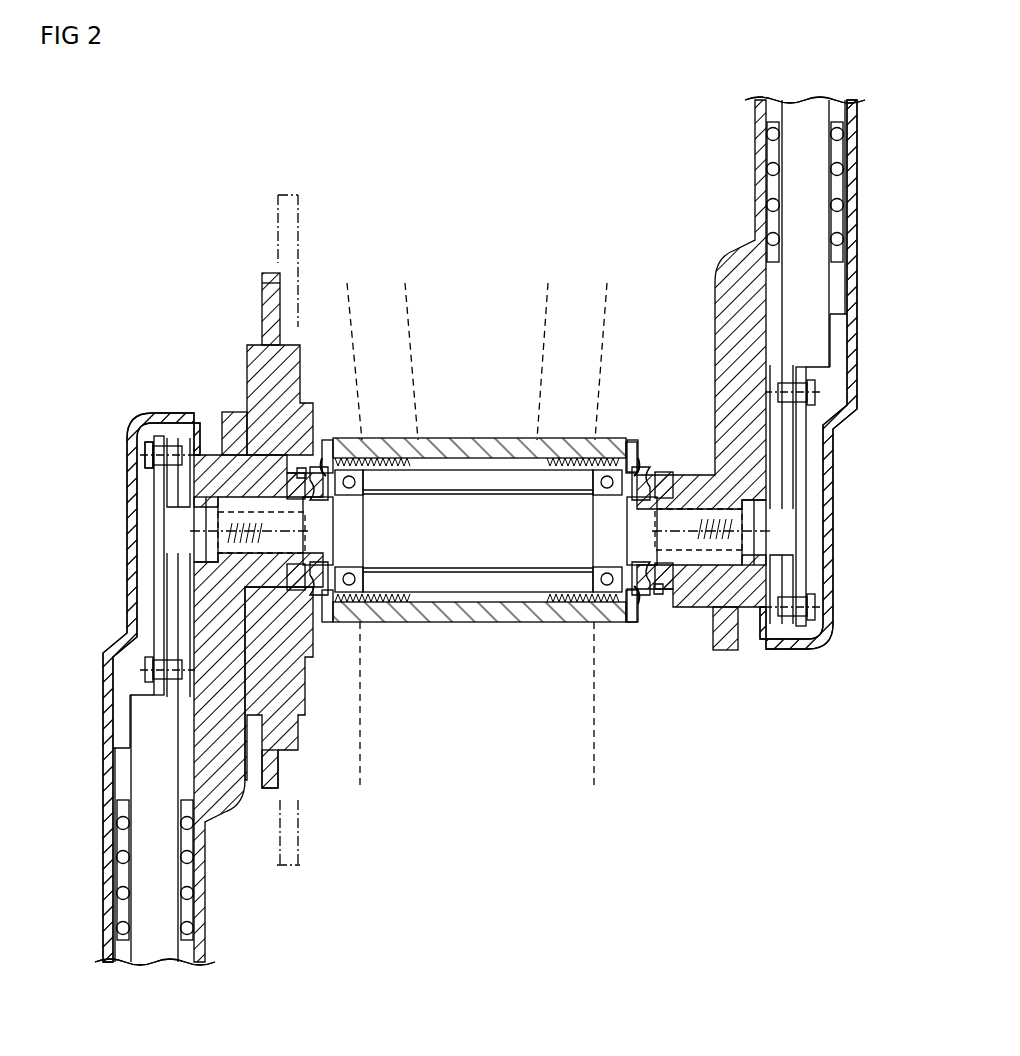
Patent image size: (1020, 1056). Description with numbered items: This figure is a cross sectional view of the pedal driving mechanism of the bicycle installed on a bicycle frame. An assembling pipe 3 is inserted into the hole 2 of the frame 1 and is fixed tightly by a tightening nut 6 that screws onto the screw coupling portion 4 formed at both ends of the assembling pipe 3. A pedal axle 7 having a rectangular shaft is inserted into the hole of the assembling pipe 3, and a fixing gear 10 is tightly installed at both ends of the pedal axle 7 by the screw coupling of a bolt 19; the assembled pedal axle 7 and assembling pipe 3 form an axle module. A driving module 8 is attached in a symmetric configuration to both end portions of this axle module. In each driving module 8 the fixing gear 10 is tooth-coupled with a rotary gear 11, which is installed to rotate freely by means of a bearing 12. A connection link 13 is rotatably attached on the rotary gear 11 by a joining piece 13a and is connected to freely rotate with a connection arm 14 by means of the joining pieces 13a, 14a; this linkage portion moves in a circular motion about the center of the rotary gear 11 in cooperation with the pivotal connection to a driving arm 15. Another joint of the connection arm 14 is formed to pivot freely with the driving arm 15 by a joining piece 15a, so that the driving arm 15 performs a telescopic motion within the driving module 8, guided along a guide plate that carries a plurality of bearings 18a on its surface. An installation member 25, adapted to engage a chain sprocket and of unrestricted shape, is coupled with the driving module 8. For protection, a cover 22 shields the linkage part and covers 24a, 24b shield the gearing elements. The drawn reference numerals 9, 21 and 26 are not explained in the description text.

The frame 1 is at (468, 448).
The hole 2 is at (467, 602).
The assembling pipe 3 is at (490, 594).
The screw coupling portion 4 is at (385, 460).
The tightening nut 6 is at (327, 618).
The pedal axle 7 is at (540, 550).
The driving module 8 is at (107, 858).
The bearing cup 9 is at (325, 470).
The fixing gear 10 is at (297, 588).
The rotary gear 11 is at (297, 468).
The bearing 12 is at (230, 507).
The connection link 13 is at (165, 478).
The joining piece 13a is at (150, 440).
The connection arm 14 is at (158, 594).
The joining piece 14a is at (148, 457).
The driving arm 15 is at (135, 783).
The joining piece 15a is at (150, 668).
The bearings 18a is at (190, 895).
The bolt 19 is at (205, 556).
The bearing 21 is at (358, 588).
The cover 22 is at (130, 533).
The cover 24a is at (638, 462).
The cover 24b is at (322, 460).
The installation member 25 is at (275, 748).
The axis 26 is at (300, 826).